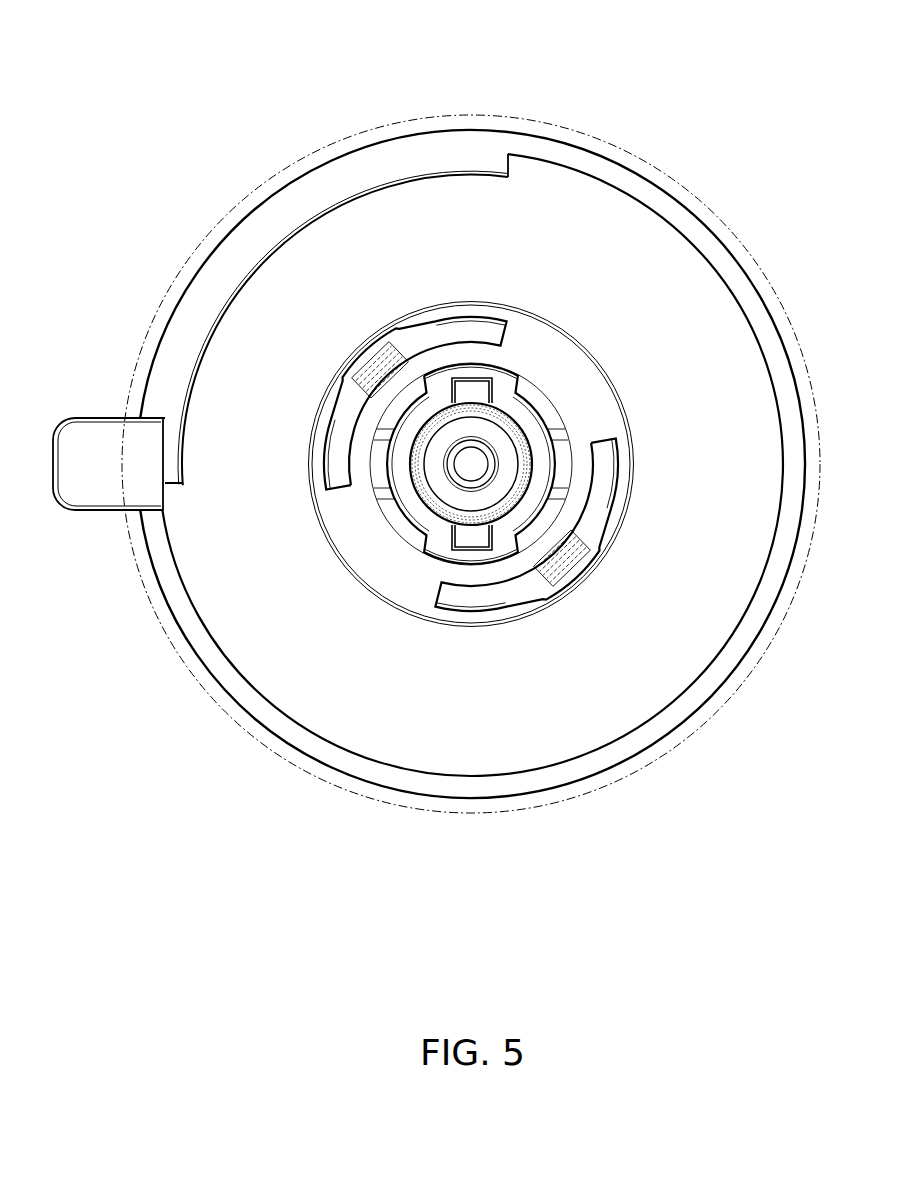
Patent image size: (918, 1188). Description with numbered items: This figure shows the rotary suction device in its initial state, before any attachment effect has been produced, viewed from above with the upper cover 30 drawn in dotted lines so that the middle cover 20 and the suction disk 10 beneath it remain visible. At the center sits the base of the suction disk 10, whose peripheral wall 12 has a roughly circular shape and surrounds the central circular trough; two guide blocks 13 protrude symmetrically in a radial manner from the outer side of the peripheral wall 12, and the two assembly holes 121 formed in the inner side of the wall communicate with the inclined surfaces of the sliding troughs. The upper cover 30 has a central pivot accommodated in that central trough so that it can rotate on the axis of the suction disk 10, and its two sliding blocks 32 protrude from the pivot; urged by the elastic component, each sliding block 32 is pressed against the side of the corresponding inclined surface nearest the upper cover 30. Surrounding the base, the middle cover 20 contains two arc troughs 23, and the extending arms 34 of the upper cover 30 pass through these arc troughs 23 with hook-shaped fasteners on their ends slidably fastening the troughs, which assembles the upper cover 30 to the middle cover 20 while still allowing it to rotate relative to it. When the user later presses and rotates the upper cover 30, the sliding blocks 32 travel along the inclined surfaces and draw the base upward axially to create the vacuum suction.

The suction disk 10 is at (320, 165).
The middle cover 20 is at (645, 236).
The upper cover 30 is at (524, 116).
The peripheral wall 12 is at (533, 430).
The assembly hole 121 is at (476, 388).
The guide block 13 is at (507, 385).
The arc trough 23 is at (612, 457).
The sliding block 32 is at (422, 360).
The extending arm 34 is at (375, 380).